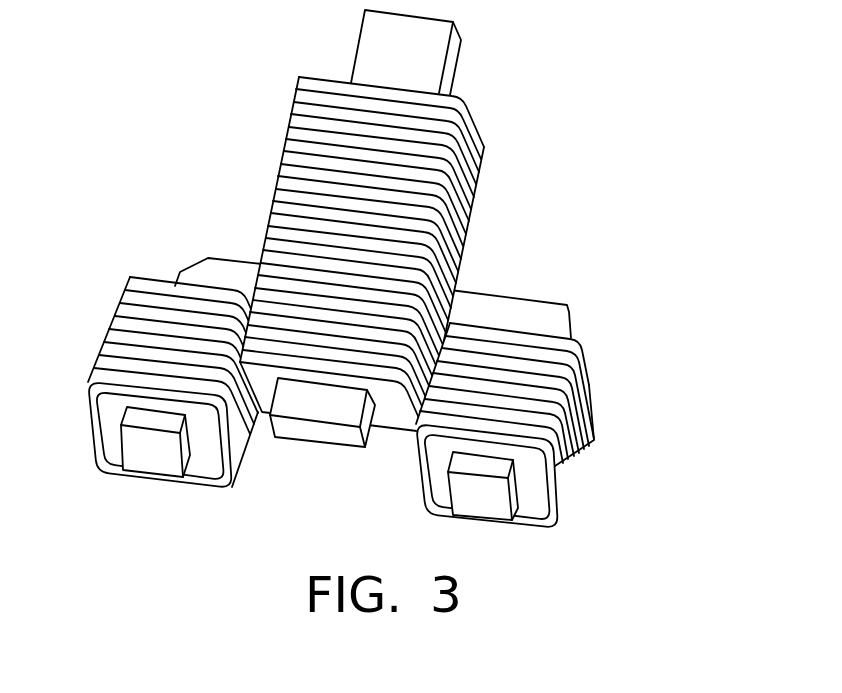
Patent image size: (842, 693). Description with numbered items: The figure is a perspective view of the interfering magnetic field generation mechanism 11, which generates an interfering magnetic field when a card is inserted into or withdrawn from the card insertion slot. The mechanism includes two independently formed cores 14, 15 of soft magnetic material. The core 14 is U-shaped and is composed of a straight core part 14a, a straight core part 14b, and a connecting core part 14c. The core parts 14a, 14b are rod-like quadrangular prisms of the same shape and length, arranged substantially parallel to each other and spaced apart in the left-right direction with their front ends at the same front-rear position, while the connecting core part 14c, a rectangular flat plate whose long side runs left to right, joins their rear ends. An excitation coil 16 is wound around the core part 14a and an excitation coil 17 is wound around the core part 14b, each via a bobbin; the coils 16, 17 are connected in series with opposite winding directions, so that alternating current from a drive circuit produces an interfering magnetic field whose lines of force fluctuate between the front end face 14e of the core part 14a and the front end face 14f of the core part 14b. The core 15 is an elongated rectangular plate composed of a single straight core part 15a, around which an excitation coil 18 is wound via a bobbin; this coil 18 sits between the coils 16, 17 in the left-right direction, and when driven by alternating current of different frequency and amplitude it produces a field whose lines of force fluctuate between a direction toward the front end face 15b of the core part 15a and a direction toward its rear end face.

The interfering magnetic field generation mechanism 11 is at (346, 291).
The core 14 is at (373, 288).
The core part 14a is at (452, 500).
The core part 14b is at (118, 445).
The connecting core part 14c is at (511, 297).
The front end face 14e is at (478, 510).
The front end face 14f is at (150, 466).
The core 15 is at (354, 252).
The core part 15a is at (356, 45).
The front end face 15b is at (298, 432).
The excitation coil 16 is at (506, 447).
The excitation coil 17 is at (146, 401).
The excitation coil 18 is at (284, 149).